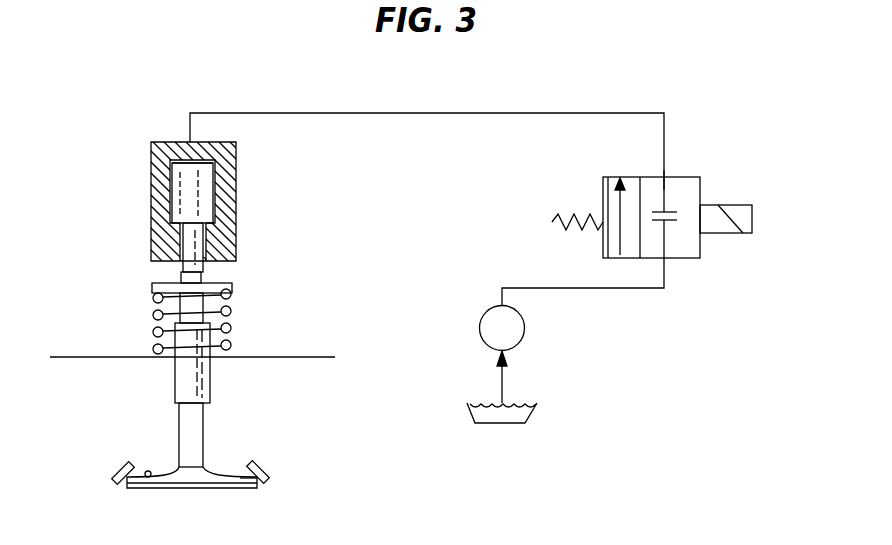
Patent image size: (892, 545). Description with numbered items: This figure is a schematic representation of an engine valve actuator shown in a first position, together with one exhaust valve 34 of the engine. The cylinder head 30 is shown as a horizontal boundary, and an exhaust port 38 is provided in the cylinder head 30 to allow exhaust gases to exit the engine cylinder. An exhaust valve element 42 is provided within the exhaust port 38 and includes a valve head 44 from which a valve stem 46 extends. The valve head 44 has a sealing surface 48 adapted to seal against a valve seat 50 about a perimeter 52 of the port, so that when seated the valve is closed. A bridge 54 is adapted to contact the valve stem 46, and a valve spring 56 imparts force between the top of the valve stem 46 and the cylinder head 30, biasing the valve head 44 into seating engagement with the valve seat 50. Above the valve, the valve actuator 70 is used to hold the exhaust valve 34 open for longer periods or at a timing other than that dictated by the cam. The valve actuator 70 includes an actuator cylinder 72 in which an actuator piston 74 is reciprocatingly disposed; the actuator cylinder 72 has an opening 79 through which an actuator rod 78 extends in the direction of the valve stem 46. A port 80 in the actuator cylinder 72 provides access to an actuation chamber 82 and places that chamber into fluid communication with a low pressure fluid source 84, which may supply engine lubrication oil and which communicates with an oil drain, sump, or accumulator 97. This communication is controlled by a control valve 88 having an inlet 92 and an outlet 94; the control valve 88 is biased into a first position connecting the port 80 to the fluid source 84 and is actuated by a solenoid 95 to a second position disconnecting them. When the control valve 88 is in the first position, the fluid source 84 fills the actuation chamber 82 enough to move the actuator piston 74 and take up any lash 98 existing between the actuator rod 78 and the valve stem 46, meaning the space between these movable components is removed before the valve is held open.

The cylinder head 30 is at (68, 357).
The exhaust valve 34 is at (143, 431).
The exhaust port 38 is at (127, 481).
The exhaust valve element 42 is at (220, 382).
The valve head 44 is at (200, 484).
The valve stem 46 is at (193, 420).
The sealing surface 48 is at (151, 478).
The valve seat 50 is at (259, 481).
The perimeter 52 is at (266, 465).
The bridge 54 is at (226, 288).
The valve spring 56 is at (232, 338).
The valve actuator 70 is at (168, 126).
The actuator cylinder 72 is at (165, 178).
The actuator piston 74 is at (187, 200).
The actuator rod 78 is at (188, 252).
The opening 79 is at (207, 260).
The port 80 is at (190, 142).
The actuation chamber 82 is at (208, 162).
The low pressure fluid source 84 is at (495, 330).
The control valve 88 is at (702, 185).
The inlet 92 is at (667, 262).
The outlet 94 is at (664, 177).
The solenoid 95 is at (742, 234).
The accumulator 97 is at (490, 425).
The lash 98 is at (173, 275).